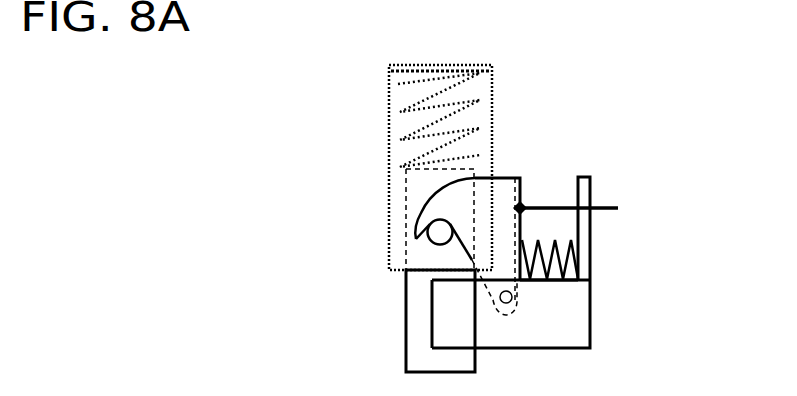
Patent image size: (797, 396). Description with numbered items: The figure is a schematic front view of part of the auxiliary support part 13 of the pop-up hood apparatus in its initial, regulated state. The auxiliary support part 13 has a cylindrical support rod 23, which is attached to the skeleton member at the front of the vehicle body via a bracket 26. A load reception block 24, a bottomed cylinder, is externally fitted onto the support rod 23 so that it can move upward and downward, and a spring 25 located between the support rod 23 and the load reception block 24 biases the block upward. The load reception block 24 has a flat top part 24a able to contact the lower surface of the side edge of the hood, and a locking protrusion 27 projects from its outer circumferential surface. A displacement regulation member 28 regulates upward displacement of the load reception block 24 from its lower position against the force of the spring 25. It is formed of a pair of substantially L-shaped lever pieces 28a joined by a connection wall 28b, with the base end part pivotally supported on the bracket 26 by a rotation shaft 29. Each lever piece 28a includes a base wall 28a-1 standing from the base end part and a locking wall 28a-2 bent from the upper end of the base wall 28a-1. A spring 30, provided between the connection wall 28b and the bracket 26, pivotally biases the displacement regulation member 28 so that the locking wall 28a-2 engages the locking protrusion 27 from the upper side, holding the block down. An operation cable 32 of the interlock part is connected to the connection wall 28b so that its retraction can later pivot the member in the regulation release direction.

The auxiliary support part 13 is at (528, 33).
The support rod 23 is at (413, 356).
The load reception block 24 is at (389, 136).
The flat top part 24a is at (458, 65).
The spring 25 is at (413, 68).
The bracket 26 is at (580, 333).
The locking protrusion 27 is at (436, 244).
The displacement regulation member 28 is at (522, 177).
The lever piece 28a is at (517, 177).
The base wall 28a-1 is at (503, 272).
The locking wall 28a-2 is at (417, 222).
The connection wall 28b is at (513, 198).
The rotation shaft 29 is at (512, 306).
The spring 30 is at (578, 238).
The operation cable 32 is at (600, 207).